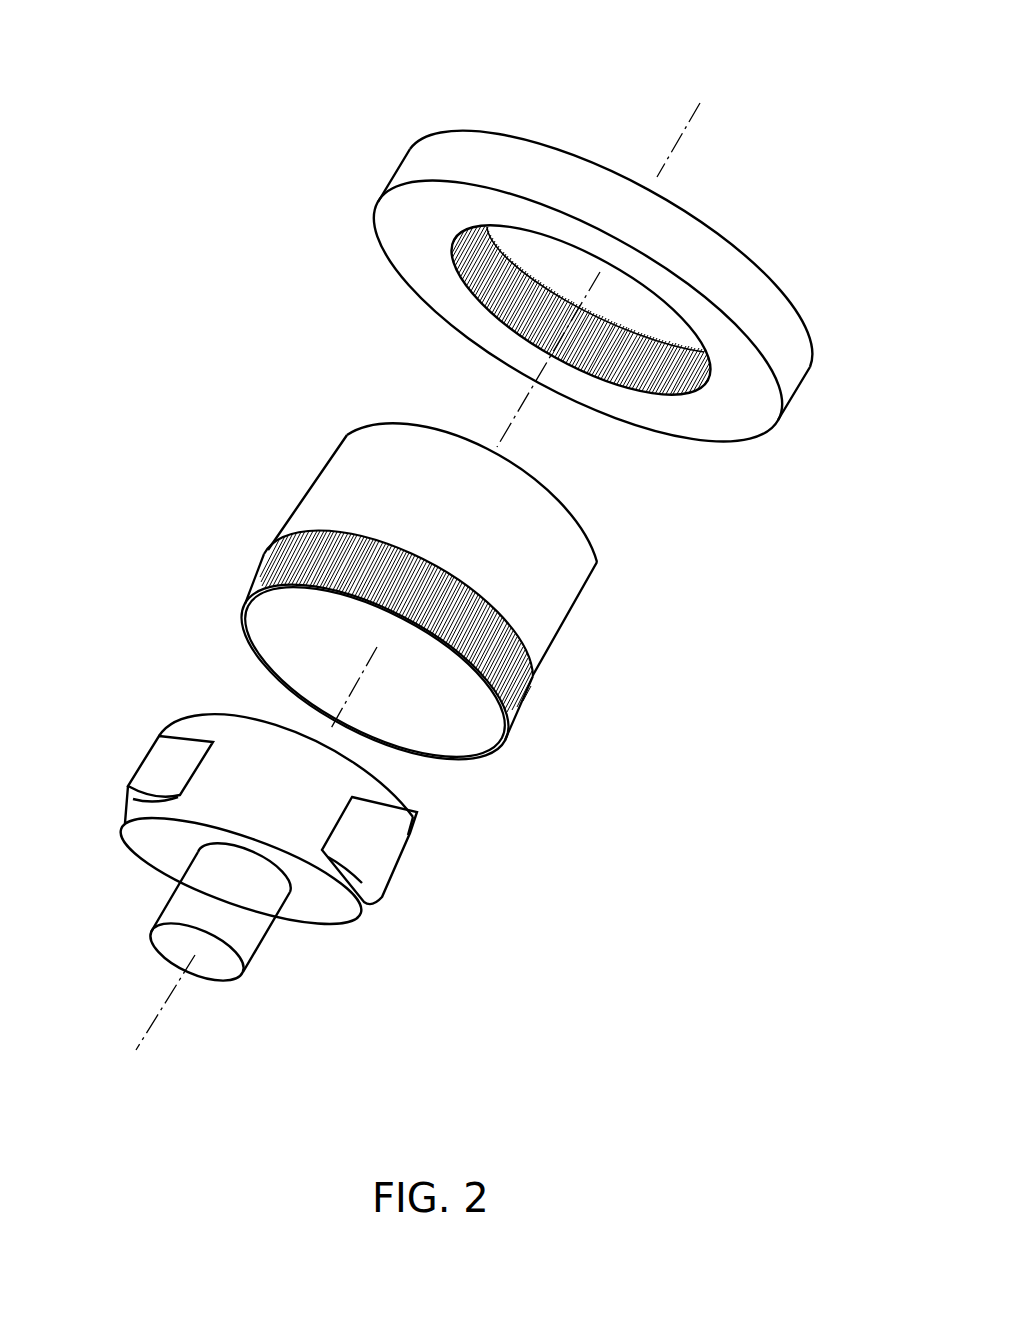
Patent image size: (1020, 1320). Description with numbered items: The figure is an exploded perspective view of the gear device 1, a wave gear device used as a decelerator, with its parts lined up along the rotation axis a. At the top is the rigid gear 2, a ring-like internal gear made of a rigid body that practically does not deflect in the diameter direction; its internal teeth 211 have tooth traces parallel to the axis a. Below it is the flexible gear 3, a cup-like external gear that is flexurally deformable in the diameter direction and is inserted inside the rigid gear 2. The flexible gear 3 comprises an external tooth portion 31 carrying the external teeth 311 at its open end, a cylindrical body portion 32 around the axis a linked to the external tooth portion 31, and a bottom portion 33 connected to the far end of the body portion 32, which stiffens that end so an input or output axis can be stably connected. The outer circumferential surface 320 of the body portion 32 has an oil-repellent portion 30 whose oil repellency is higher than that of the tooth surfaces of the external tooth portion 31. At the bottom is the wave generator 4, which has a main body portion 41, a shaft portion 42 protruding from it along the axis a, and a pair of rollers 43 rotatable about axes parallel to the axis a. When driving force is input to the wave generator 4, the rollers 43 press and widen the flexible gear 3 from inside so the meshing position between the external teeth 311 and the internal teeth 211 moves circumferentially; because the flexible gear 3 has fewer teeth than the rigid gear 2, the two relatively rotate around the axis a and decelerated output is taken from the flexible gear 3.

The gear device 1 is at (210, 202).
The rigid gear 2 is at (462, 120).
The internal teeth 211 is at (643, 364).
The flexible gear 3 is at (313, 495).
The oil-repellent portion 30 is at (504, 556).
The outer circumferential surface 320 is at (556, 607).
The external tooth portion 31 is at (457, 662).
The external teeth 311 is at (517, 690).
The body portion 32 is at (350, 466).
The bottom portion 33 is at (552, 494).
The wave generator 4 is at (214, 713).
The main body portion 41 is at (402, 806).
The shaft portion 42 is at (248, 930).
The rollers 43 is at (160, 766).
The axis a is at (186, 1040).